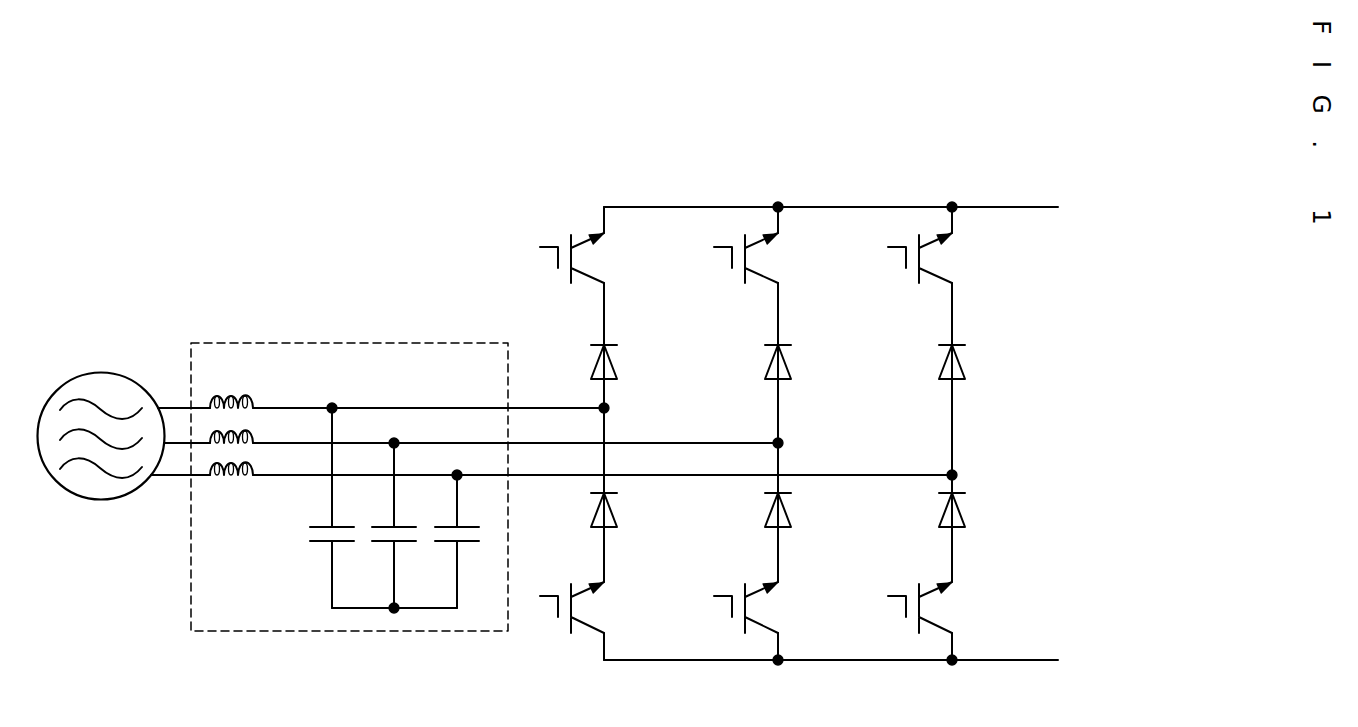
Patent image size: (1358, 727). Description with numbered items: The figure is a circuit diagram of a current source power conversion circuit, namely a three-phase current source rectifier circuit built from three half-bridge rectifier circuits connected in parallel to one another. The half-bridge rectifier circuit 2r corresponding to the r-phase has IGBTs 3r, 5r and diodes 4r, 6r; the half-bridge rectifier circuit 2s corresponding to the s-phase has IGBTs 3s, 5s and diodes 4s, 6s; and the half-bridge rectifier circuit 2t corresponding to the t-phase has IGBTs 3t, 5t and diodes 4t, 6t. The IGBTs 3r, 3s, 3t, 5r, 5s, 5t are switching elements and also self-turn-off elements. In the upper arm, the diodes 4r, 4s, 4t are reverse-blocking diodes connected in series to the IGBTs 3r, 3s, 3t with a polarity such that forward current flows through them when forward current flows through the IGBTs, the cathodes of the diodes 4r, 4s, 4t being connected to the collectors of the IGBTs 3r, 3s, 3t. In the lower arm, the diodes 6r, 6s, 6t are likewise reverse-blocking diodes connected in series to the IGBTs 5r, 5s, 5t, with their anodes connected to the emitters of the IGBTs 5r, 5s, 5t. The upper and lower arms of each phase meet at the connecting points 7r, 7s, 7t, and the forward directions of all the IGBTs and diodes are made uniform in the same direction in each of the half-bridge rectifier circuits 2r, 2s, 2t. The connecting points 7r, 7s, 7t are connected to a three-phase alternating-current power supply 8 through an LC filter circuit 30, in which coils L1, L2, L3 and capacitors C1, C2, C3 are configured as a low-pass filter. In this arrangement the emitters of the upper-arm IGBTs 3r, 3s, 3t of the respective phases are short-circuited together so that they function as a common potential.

The three-phase alternating-current power supply 8 is at (101, 372).
The LC filter circuit 30 is at (347, 343).
The coil L1 is at (257, 398).
The coil L2 is at (257, 433).
The coil L3 is at (257, 468).
The capacitor C1 is at (340, 543).
The capacitor C2 is at (402, 543).
The capacitor C3 is at (465, 543).
The half-bridge rectifier circuit 2r is at (609, 190).
The half-bridge rectifier circuit 2s is at (783, 190).
The half-bridge rectifier circuit 2t is at (957, 190).
The IGBT 3r is at (593, 258).
The IGBT 3s is at (768, 258).
The IGBT 3t is at (940, 258).
The diode 4r is at (618, 363).
The diode 4s is at (792, 363).
The diode 4t is at (966, 363).
The IGBT 5r is at (593, 609).
The IGBT 5s is at (768, 609).
The IGBT 5t is at (940, 609).
The diode 6r is at (618, 511).
The diode 6s is at (792, 511).
The diode 6t is at (966, 511).
The connecting point 7r is at (610, 407).
The connecting point 7s is at (784, 443).
The connecting point 7t is at (958, 475).